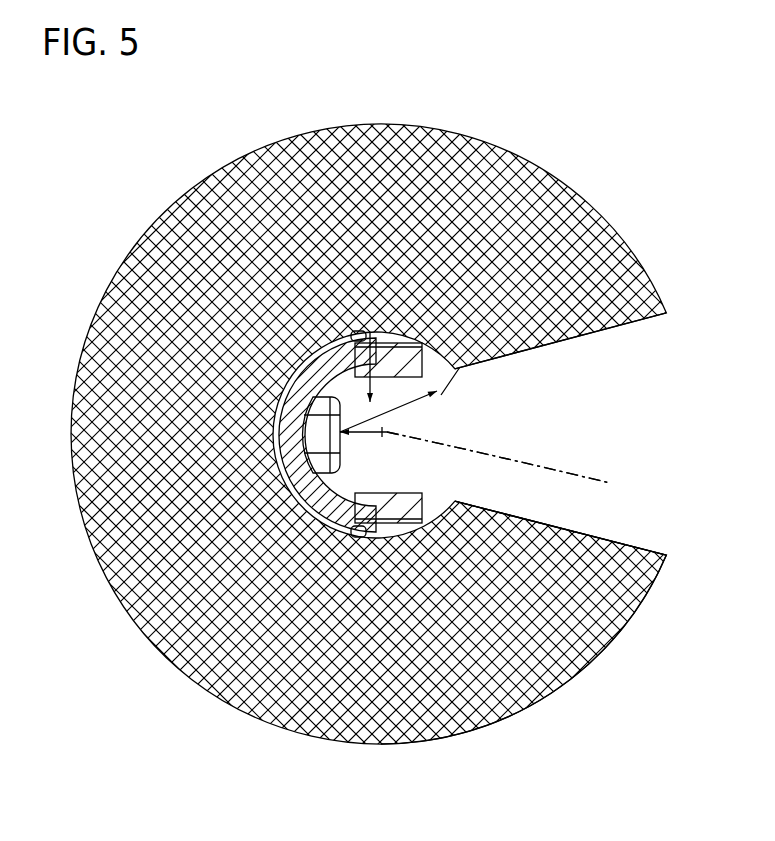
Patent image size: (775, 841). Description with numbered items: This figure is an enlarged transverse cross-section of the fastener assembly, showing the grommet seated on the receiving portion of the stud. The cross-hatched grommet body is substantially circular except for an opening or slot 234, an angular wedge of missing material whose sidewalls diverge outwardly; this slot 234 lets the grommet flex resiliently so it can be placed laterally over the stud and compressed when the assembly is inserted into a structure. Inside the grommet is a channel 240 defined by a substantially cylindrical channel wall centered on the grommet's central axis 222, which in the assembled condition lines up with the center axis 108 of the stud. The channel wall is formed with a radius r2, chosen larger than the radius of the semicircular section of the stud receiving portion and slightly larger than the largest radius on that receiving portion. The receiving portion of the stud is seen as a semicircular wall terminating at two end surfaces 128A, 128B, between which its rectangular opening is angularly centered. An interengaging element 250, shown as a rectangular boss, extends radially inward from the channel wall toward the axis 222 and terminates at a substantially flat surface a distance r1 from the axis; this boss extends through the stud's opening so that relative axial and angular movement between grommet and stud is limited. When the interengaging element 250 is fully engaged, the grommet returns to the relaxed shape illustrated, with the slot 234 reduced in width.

The channel 240 is at (370, 333).
The end surface 128A is at (382, 434).
The end surface 128B is at (462, 503).
The opening or slot 234 is at (612, 382).
The interengaging element 250 is at (350, 472).
The distance r1 is at (388, 453).
The radius r2 is at (433, 397).
The center axis 108 is at (546, 460).
The central axis 222 is at (546, 460).